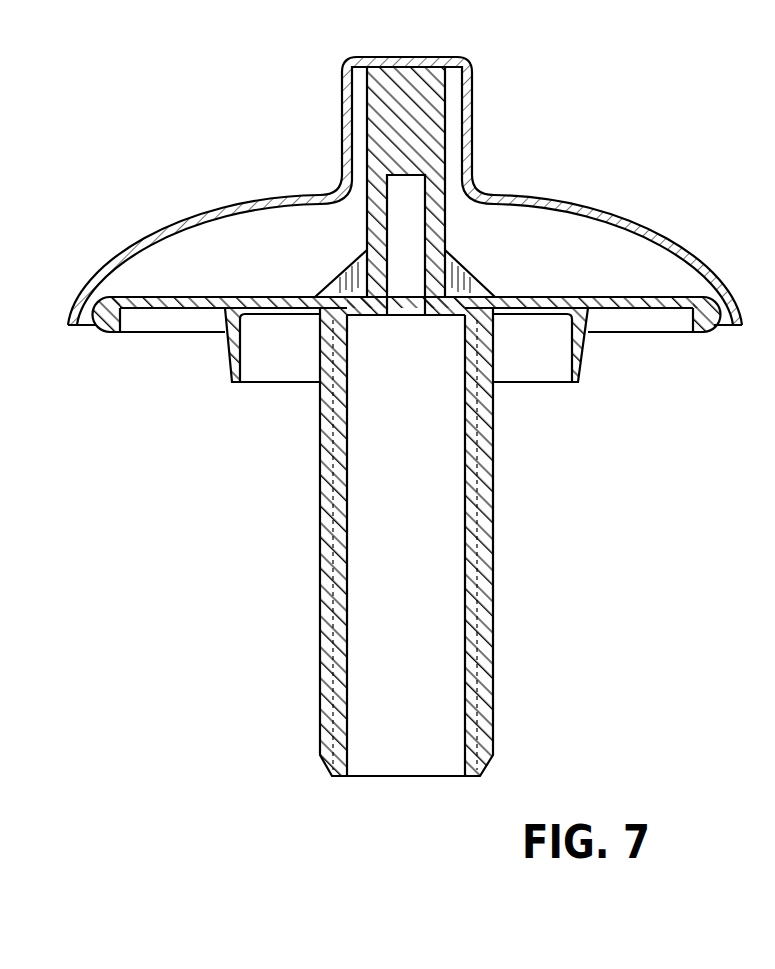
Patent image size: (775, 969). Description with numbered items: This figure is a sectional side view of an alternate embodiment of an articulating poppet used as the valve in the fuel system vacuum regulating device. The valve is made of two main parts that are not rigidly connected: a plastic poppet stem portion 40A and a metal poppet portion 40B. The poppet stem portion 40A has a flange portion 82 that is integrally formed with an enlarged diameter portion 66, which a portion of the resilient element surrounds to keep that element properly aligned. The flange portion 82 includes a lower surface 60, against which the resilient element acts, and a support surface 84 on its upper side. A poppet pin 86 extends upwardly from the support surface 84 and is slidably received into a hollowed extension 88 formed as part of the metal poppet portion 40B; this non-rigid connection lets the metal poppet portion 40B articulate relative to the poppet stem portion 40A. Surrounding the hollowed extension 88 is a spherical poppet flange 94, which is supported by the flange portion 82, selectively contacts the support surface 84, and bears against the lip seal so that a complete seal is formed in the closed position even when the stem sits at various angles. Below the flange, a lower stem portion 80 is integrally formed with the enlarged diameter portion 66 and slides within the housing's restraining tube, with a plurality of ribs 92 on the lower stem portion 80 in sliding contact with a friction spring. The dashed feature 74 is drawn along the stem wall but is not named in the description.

The poppet stem portion 40A is at (407, 466).
The metal poppet portion 40B is at (405, 191).
The lower surface 60 is at (152, 308).
The enlarged diameter portion 66 is at (578, 380).
The internal passage 74 is at (480, 637).
The lower stem portion 80 is at (387, 777).
The flange portion 82 is at (267, 298).
The support surface 84 is at (622, 296).
The poppet pin 86 is at (396, 103).
The hollowed extension 88 is at (472, 110).
The ribs 92 is at (493, 525).
The spherical poppet flange 94 is at (617, 214).